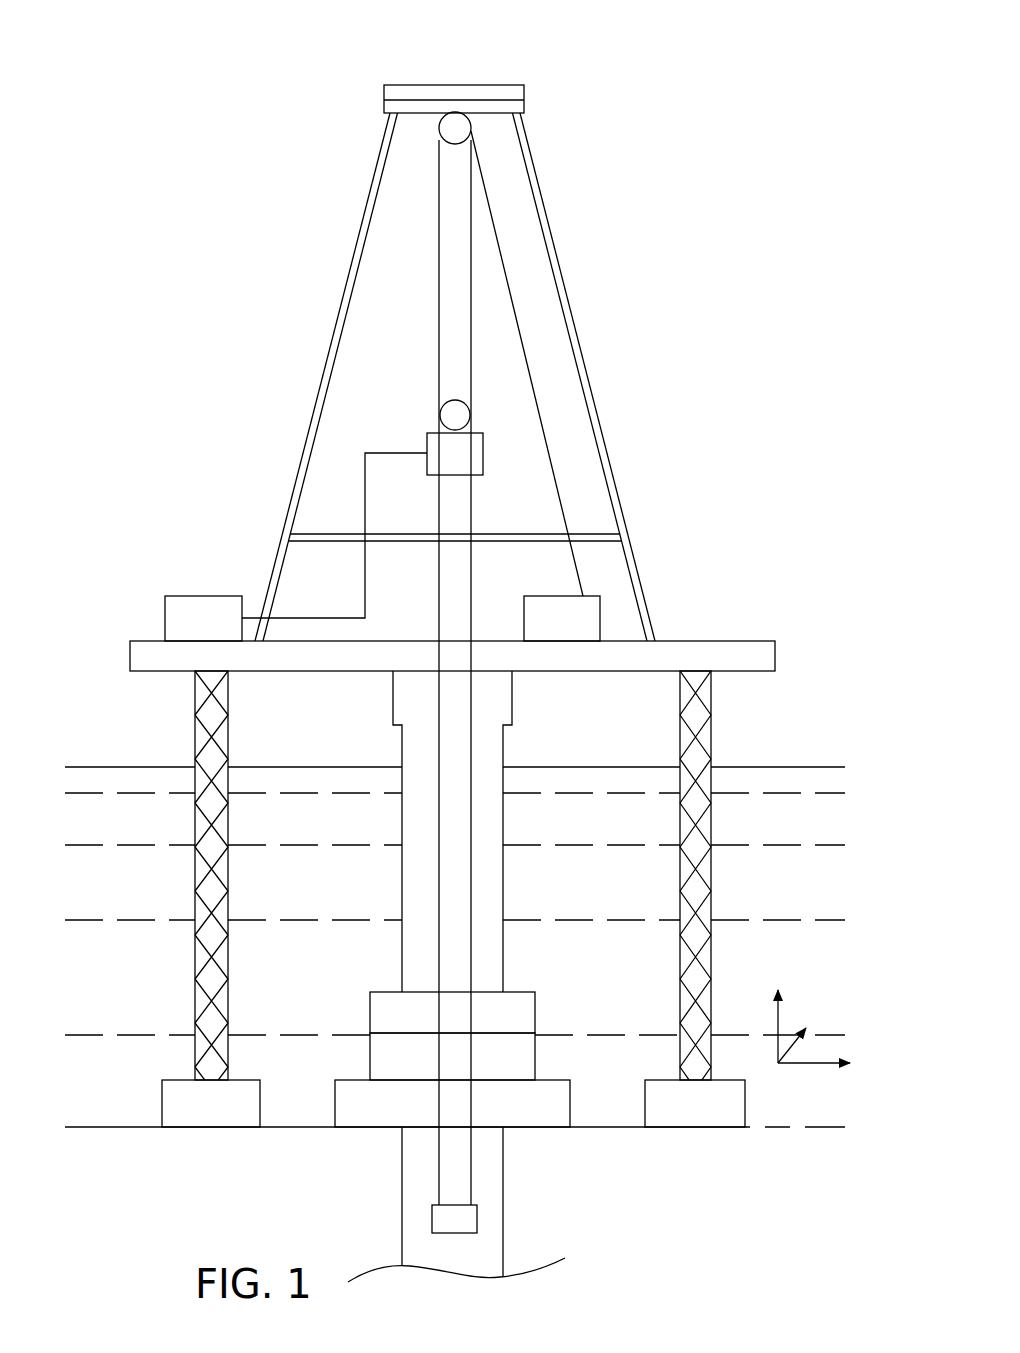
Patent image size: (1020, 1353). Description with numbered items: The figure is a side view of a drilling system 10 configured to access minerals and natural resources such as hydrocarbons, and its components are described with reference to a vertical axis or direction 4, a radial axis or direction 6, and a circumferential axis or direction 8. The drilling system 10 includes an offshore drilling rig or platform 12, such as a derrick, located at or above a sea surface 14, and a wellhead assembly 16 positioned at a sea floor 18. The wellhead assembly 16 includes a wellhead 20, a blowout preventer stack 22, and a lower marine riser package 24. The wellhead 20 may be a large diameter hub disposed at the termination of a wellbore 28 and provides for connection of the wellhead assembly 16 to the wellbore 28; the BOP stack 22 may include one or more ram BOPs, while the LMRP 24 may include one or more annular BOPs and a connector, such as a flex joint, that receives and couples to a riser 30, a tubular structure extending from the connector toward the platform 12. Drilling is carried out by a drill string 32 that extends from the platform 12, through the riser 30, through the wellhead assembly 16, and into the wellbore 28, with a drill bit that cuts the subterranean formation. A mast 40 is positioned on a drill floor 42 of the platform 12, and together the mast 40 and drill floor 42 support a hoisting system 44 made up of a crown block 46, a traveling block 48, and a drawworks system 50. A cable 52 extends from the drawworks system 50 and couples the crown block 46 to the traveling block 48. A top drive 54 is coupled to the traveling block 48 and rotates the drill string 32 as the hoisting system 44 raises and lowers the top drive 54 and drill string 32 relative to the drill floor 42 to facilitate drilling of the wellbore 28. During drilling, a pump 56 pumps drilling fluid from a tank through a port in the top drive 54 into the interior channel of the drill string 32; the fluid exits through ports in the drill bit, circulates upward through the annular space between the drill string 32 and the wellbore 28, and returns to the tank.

The drilling system 10 is at (636, 48).
The offshore drilling rig or platform 12 is at (572, 152).
The mast 40 is at (596, 375).
The hoisting system 44 is at (418, 322).
The crown block 46 is at (455, 130).
The traveling block 48 is at (455, 418).
The top drive 54 is at (466, 455).
The cable 52 is at (497, 230).
The drawworks system 50 is at (558, 596).
The pump 56 is at (200, 596).
The drill floor 42 is at (713, 641).
The drill string 32 is at (503, 762).
The riser 30 is at (504, 830).
The sea surface 14 is at (133, 767).
The sea floor 18 is at (752, 1128).
The wellhead assembly 16 is at (570, 988).
The lower marine riser package 24 is at (525, 992).
The blowout preventer stack 22 is at (536, 1055).
The wellhead 20 is at (572, 1105).
The wellbore 28 is at (505, 1200).
The circumferential axis or direction 8 is at (772, 1038).
The vertical axis or direction 4 is at (780, 1018).
The radial axis or direction 6 is at (808, 1060).